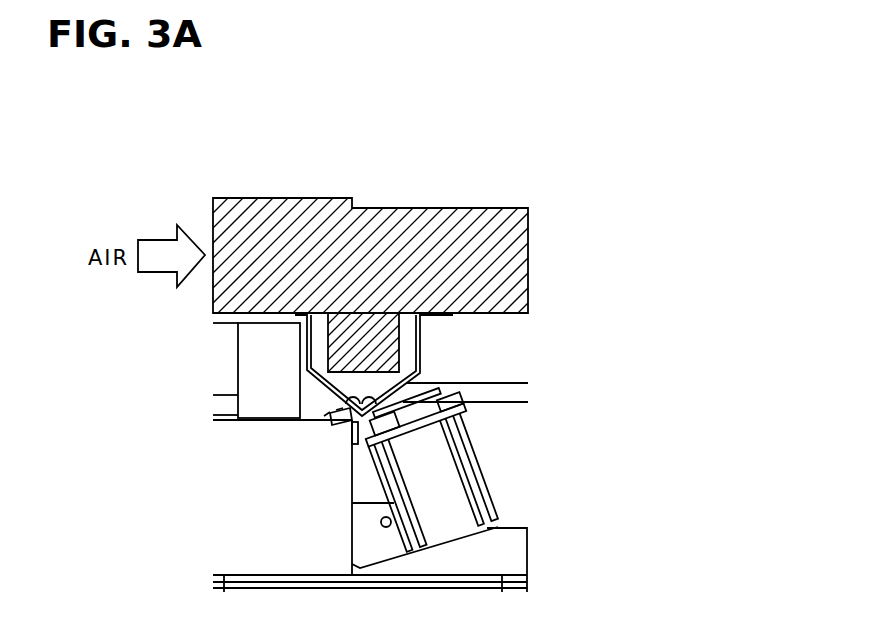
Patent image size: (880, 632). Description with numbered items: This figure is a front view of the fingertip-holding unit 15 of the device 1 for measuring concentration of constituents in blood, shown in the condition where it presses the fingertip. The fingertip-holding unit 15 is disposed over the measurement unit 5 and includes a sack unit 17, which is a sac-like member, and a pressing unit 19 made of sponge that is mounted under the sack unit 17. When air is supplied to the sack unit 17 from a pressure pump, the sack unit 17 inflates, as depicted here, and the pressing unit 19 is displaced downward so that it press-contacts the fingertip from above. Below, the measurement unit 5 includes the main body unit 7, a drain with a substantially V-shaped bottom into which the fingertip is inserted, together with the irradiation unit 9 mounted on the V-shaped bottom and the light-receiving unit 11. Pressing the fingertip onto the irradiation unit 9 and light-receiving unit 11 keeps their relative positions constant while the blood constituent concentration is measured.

The device for measuring concentration of constituents in blood 1 is at (683, 133).
The measurement unit 5 is at (418, 355).
The main body unit 7 is at (401, 386).
The irradiation unit 9 is at (333, 414).
The light-receiving unit 11 is at (403, 388).
The fingertip-holding unit 15 is at (565, 67).
The sack unit 17 is at (372, 226).
The pressing unit 19 is at (381, 330).